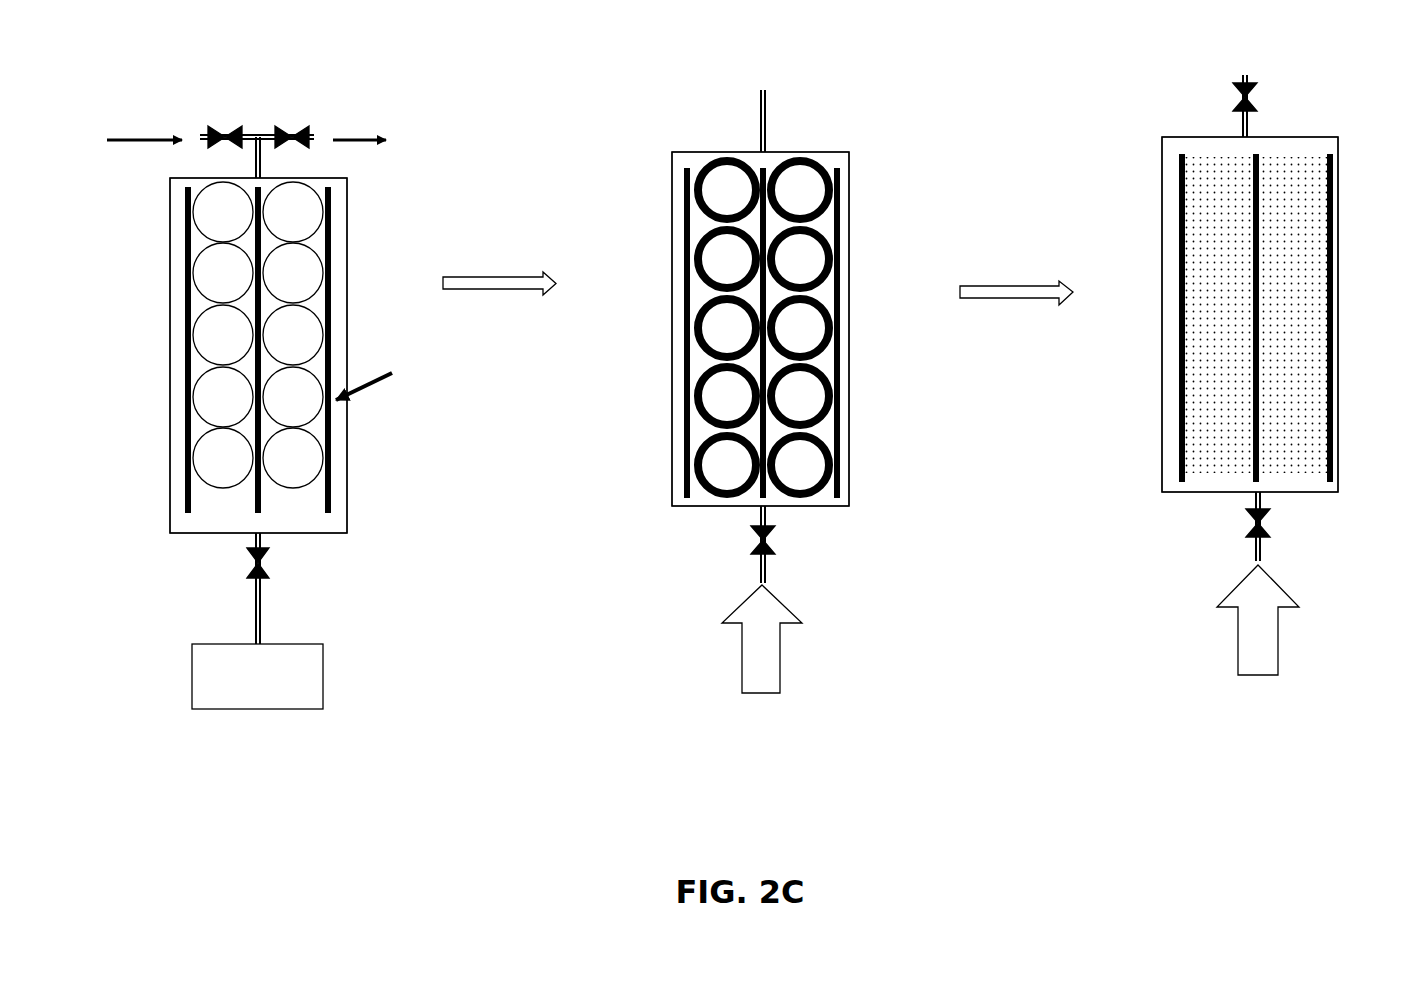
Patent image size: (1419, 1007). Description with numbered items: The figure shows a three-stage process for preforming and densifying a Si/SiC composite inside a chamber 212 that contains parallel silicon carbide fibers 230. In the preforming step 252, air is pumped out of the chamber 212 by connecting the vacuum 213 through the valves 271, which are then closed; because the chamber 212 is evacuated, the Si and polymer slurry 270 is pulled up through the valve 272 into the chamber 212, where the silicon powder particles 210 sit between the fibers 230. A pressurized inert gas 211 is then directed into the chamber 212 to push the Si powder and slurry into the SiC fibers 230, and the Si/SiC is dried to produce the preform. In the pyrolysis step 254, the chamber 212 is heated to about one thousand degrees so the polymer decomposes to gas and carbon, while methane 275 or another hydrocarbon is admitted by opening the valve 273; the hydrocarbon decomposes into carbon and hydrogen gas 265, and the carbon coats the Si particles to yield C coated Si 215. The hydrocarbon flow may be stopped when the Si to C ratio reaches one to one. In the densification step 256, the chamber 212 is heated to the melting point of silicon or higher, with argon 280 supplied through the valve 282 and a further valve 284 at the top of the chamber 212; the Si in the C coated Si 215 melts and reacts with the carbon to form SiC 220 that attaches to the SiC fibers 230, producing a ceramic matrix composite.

The silicon powder particles 210 is at (226, 494).
The pressurized inert gas 211 is at (122, 140).
The chamber 212 is at (347, 510).
The vacuum 213 is at (362, 140).
The C coated Si 215 is at (714, 152).
The SiC agglomerations 220 is at (1200, 154).
The silicon carbide fibers 230 is at (186, 258).
The preforming step 252 is at (229, 42).
The pyrolysis step 254 is at (741, 11).
The densification step 256 is at (1228, 26).
The hydrogen gas 265 is at (785, 68).
The Si and polymer slurry 270 is at (323, 678).
The valves 271 is at (226, 128).
The valve 272 is at (268, 574).
The valve 273 is at (775, 540).
The methane 275 is at (782, 663).
The argon 280 is at (1279, 640).
The valve 282 is at (1270, 523).
The valve 284 is at (1258, 96).